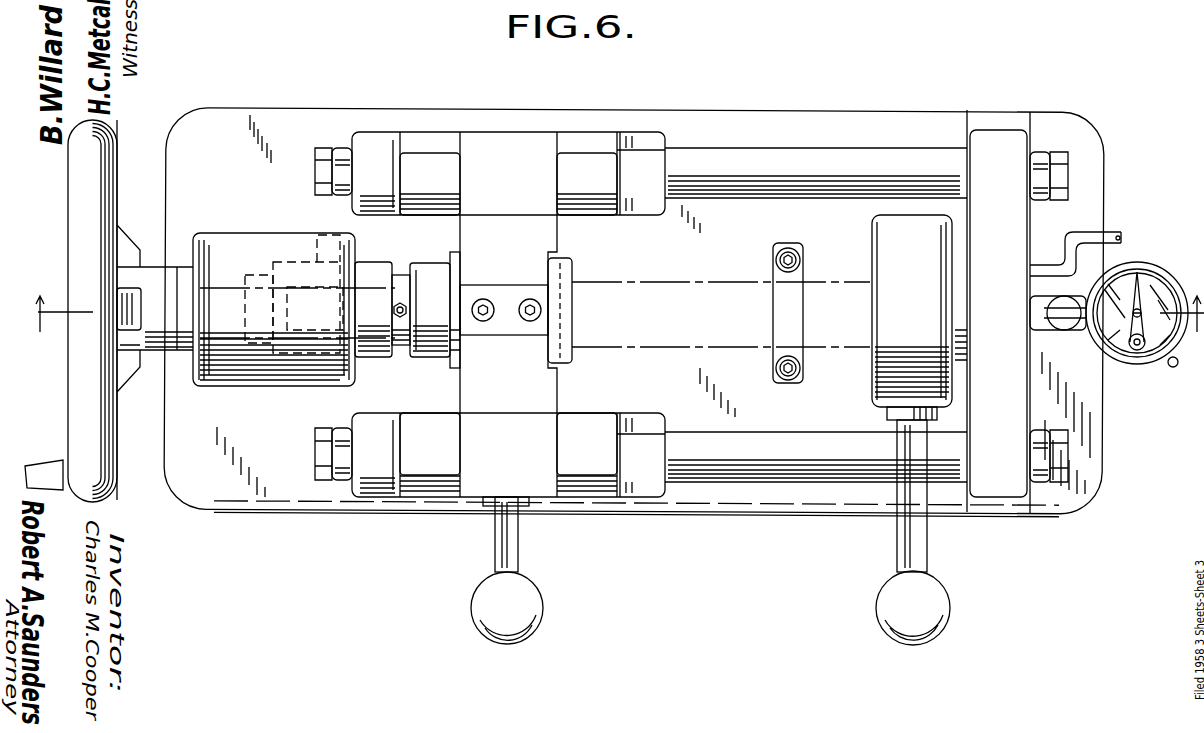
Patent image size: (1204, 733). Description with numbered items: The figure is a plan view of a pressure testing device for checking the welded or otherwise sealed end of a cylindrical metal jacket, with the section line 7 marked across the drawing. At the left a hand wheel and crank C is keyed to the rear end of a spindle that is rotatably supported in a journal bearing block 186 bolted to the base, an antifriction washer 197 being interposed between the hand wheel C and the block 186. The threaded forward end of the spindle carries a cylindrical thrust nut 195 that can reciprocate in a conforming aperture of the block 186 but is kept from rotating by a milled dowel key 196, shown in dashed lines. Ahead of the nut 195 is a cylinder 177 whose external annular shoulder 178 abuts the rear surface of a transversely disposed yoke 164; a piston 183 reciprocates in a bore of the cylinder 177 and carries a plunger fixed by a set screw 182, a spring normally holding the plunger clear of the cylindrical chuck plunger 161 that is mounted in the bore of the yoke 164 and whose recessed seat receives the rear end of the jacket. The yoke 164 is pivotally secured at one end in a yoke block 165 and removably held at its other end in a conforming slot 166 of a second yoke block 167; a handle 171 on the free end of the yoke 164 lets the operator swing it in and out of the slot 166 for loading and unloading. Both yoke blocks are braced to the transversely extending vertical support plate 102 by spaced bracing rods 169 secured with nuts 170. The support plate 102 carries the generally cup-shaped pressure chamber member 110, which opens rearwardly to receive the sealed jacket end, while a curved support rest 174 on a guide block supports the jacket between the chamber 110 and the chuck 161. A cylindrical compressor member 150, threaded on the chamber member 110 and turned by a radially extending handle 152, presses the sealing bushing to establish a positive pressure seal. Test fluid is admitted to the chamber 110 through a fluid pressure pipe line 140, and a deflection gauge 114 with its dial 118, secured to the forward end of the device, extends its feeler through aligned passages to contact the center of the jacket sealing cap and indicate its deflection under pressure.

The vertical support plate 102 is at (1005, 513).
The hand wheel and crank C is at (110, 128).
The antifriction washer 197 is at (176, 352).
The journal bearing block 186 is at (218, 235).
The milled dowel key 196 is at (322, 262).
The cylindrical thrust nut 195 is at (371, 272).
The piston 183 is at (398, 350).
The set screw 182 is at (406, 308).
The cylinder 177 is at (437, 261).
The external annular shoulder 178 is at (455, 368).
The yoke 164 is at (497, 150).
The chuck plunger 161 is at (558, 284).
The yoke block 165 is at (418, 158).
The second yoke block 167 is at (435, 497).
The nuts 170 is at (343, 150).
The bracing rods 169 is at (733, 158).
The pressure chamber member 110 is at (958, 372).
The curved support rest 174 is at (802, 300).
The cylindrical compressor member 150 is at (866, 383).
The handle 152 is at (942, 608).
The slot 166 is at (578, 497).
The handle 171 is at (473, 608).
The deflection gauge 114 is at (1161, 274).
The gauge dial 118 is at (1159, 379).
The fluid pressure pipe line 140 is at (1112, 232).
The section line 7 is at (607, 326).